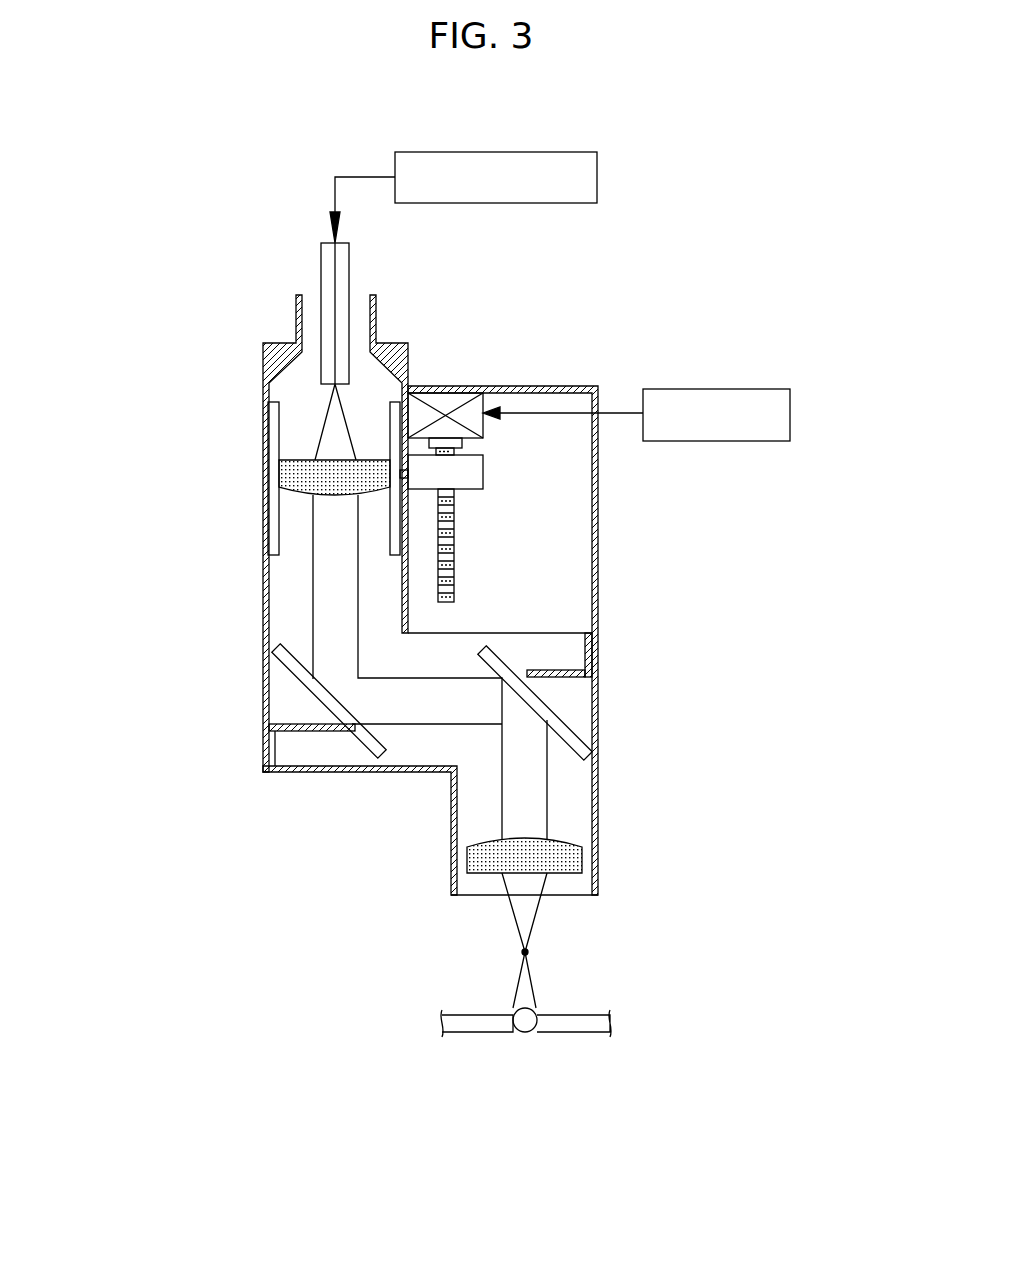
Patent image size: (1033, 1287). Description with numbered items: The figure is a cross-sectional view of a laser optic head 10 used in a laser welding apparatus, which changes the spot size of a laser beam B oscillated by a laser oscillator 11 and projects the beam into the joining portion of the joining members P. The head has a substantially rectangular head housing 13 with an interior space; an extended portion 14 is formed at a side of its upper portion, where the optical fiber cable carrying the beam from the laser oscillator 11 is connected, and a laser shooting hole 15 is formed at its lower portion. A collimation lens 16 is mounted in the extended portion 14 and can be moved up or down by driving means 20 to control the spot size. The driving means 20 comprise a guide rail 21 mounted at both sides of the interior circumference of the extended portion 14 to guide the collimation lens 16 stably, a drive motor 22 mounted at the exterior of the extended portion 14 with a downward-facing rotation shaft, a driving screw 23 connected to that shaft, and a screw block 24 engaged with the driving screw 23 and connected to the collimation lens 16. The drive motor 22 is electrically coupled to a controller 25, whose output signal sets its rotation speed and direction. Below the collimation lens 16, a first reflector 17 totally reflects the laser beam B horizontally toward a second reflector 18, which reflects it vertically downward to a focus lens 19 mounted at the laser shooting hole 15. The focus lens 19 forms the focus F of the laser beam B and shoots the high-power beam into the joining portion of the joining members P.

The laser optic head 10 is at (258, 292).
The laser oscillator 11 is at (597, 176).
The head housing 13 is at (598, 525).
The extended portion 14 is at (262, 355).
The laser shooting hole 15 is at (490, 902).
The collimation lens 16 is at (284, 469).
The first reflector 17 is at (284, 645).
The second reflector 18 is at (500, 650).
The focus lens 19 is at (585, 856).
The driving means 20 is at (543, 465).
The guide rail 21 is at (276, 413).
The drive motor 22 is at (445, 392).
The driving screw 23 is at (455, 572).
The screw block 24 is at (466, 486).
The controller 25 is at (736, 389).
The laser beam B is at (537, 916).
The focus F is at (528, 953).
The joining members P is at (575, 1026).